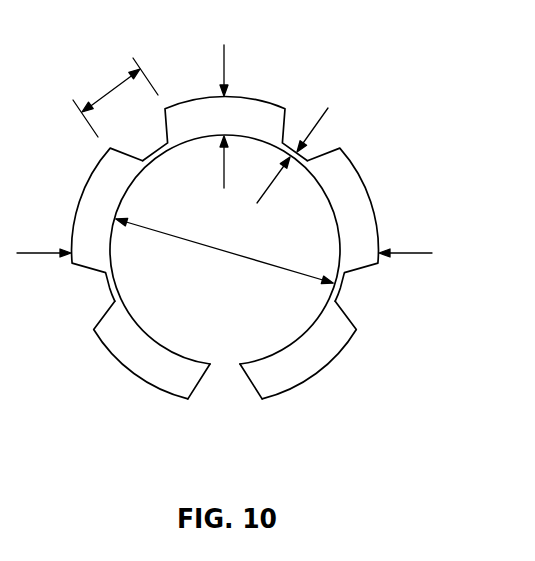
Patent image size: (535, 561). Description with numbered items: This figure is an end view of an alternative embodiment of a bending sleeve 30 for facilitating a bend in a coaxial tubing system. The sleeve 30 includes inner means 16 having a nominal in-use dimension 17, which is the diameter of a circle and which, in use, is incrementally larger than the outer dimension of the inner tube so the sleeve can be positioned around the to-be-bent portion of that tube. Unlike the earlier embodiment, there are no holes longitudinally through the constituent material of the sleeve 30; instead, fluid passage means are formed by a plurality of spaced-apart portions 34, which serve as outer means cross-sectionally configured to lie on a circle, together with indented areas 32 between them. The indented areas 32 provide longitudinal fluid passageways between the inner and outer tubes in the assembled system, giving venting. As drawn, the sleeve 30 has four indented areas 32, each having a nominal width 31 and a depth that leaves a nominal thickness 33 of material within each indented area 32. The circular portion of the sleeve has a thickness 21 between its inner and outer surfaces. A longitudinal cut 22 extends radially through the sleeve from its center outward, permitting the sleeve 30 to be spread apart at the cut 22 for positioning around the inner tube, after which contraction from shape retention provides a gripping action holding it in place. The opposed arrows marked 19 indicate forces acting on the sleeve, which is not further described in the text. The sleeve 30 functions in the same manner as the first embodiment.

The bending sleeve 30 is at (408, 337).
The inner means 16 is at (308, 327).
The nominal in-use dimension 17 is at (215, 251).
The radial compressive force 19 is at (413, 254).
The thickness 21 is at (225, 63).
The longitudinal cut 22 is at (222, 372).
The nominal width 31 is at (107, 90).
The indented areas 32 is at (107, 289).
The nominal thickness 33 is at (320, 118).
The spaced-apart portions 34 is at (370, 199).